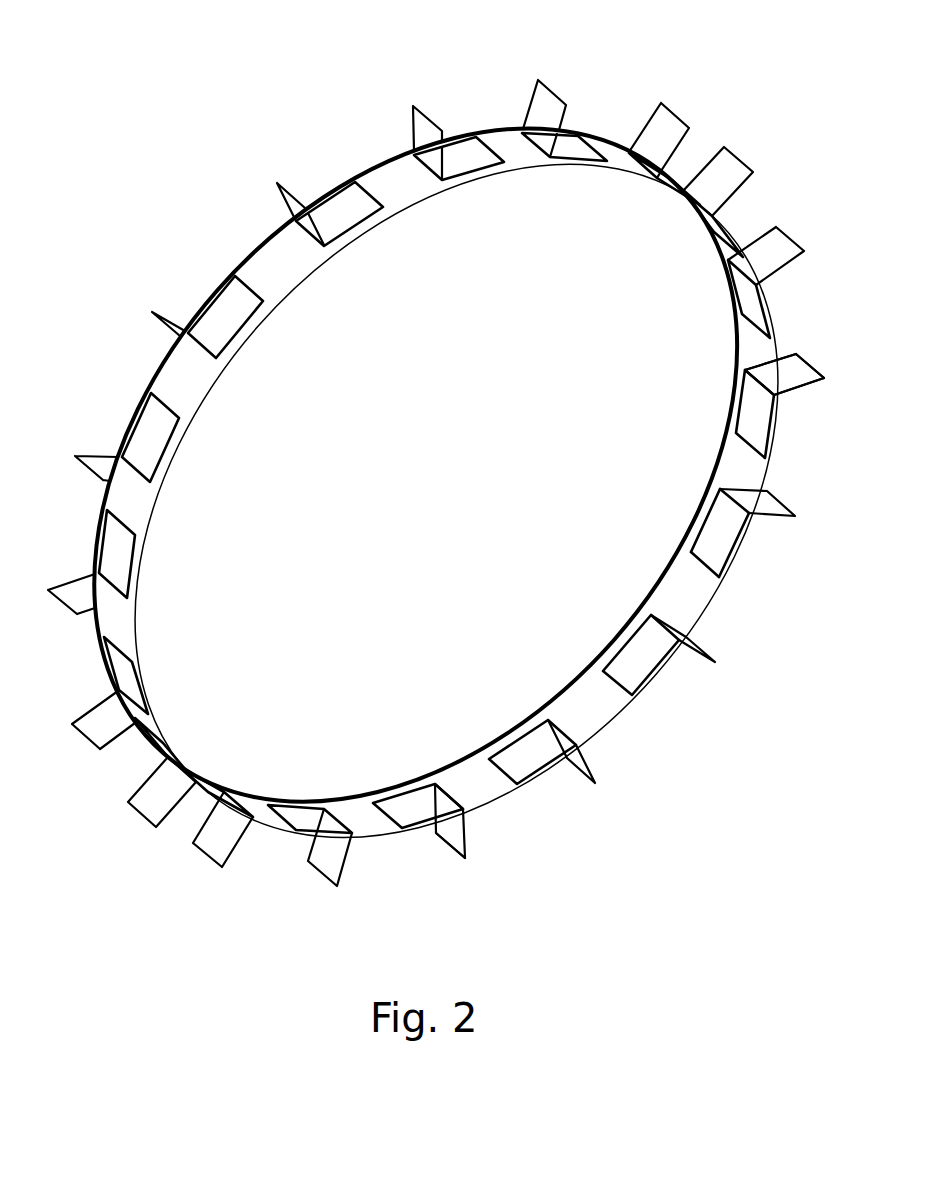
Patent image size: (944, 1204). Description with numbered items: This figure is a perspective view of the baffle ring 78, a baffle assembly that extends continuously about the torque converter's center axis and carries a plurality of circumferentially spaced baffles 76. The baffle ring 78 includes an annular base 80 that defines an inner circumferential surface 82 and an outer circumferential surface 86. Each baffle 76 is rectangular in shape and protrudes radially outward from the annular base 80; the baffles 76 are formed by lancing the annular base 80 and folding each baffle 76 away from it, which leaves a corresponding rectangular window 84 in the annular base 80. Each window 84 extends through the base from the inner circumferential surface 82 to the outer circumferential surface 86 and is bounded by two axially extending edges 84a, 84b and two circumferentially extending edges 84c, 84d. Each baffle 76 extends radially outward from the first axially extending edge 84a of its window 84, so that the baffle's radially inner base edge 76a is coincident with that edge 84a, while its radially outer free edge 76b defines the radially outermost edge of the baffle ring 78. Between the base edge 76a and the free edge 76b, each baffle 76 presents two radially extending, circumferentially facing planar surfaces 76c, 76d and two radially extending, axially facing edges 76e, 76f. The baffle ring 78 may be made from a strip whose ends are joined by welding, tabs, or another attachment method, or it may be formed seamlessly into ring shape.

The baffle 76 is at (423, 115).
The radially inner base edge 76a is at (760, 372).
The radially outer free edge 76b is at (820, 373).
The circumferentially facing planar surface 76c is at (795, 368).
The circumferentially facing planar surface 76d is at (457, 830).
The axially facing edge 76e is at (757, 368).
The axially facing edge 76f is at (786, 393).
The baffle ring 78 is at (454, 483).
The annular base 80 is at (729, 466).
The inner circumferential surface 82 is at (522, 163).
The rectangular window 84 is at (513, 400).
The first axially extending edge 84a is at (730, 502).
The second axially extending edge 84b is at (702, 567).
The circumferentially extending edge 84c is at (702, 532).
The circumferentially extending edge 84d is at (742, 530).
The outer circumferential surface 86 is at (607, 722).